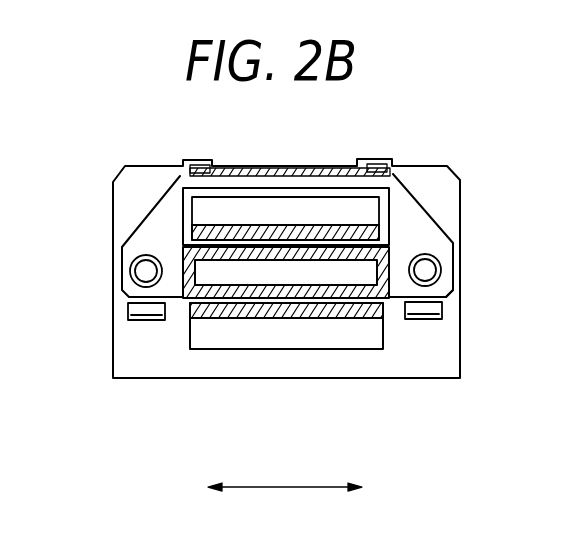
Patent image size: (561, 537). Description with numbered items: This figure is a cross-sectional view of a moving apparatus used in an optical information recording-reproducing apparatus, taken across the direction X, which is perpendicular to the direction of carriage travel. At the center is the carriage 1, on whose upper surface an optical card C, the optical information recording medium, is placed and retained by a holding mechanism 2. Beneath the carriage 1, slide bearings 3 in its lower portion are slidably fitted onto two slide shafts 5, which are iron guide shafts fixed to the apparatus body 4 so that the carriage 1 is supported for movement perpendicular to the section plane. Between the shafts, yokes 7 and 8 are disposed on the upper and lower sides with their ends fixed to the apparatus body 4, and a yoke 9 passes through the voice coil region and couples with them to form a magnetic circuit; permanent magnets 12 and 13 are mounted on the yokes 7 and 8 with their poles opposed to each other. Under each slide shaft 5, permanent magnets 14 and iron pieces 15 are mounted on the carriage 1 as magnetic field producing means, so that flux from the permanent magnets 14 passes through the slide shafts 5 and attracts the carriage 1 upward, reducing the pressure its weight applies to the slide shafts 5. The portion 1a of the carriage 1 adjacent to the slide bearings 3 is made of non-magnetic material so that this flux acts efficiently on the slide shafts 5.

The carriage 1 is at (415, 205).
The portion of the carriage 1a is at (445, 294).
The holding mechanism 2 is at (374, 162).
The slide bearings 3 is at (130, 260).
The apparatus body 4 is at (125, 203).
The slide shafts 5 is at (146, 271).
The yoke 7 is at (238, 212).
The yoke 8 is at (255, 338).
The yoke 9 is at (229, 274).
The permanent magnet 12 is at (299, 232).
The permanent magnet 13 is at (340, 320).
The permanent magnets 14 is at (124, 307).
The iron pieces 15 is at (136, 322).
The optical card C is at (270, 172).
The direction X is at (285, 473).